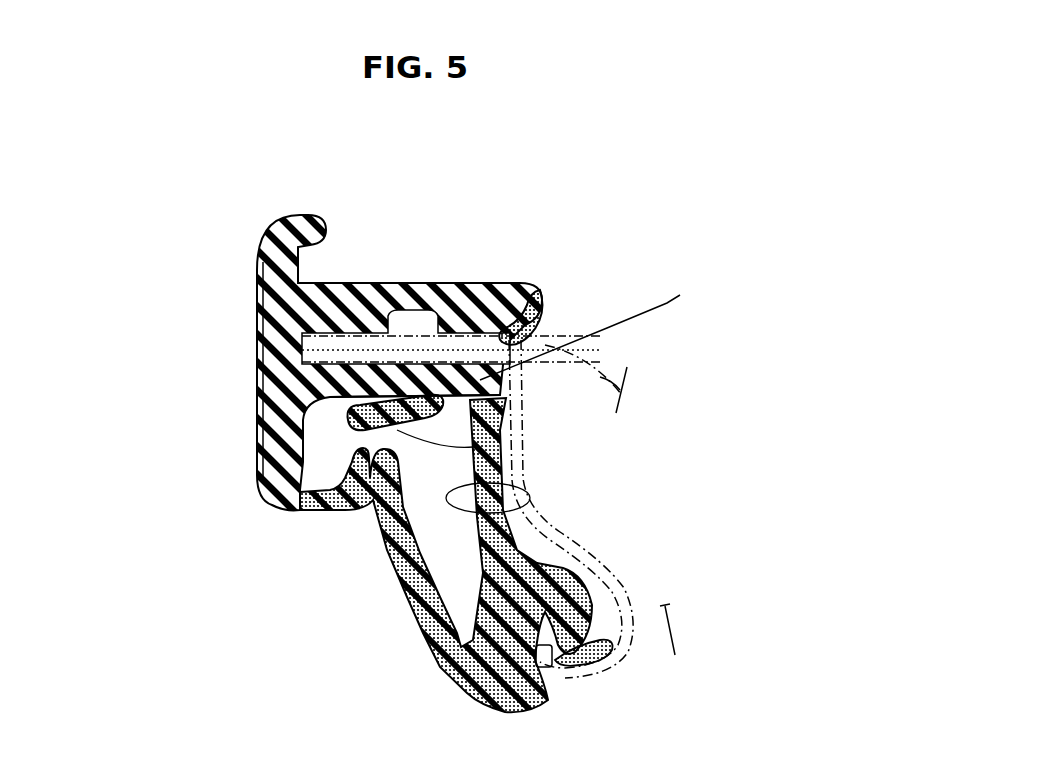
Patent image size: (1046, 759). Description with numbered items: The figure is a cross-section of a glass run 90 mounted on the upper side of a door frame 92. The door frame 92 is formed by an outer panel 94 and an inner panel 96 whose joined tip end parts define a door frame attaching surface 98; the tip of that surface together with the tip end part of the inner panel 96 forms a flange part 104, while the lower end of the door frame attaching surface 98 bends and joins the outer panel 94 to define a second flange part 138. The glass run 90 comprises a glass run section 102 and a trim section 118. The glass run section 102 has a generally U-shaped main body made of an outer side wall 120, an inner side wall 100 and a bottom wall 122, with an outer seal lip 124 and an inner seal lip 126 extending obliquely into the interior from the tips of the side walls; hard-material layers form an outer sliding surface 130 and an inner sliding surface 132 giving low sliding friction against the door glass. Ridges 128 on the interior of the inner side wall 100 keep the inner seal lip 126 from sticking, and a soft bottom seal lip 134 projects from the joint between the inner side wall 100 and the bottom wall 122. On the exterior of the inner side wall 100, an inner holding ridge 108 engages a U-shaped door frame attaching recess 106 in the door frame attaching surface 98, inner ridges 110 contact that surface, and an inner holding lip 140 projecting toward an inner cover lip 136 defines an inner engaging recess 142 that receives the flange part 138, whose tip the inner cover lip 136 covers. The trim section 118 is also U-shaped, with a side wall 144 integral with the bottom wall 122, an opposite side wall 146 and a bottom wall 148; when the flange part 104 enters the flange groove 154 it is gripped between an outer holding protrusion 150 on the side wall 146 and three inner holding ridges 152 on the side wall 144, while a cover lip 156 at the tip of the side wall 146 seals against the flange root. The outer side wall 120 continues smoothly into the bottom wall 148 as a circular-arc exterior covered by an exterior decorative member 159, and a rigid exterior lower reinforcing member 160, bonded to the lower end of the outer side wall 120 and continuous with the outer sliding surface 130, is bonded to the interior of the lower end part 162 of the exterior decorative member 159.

The glass run 90 is at (235, 214).
The door frame 92 is at (562, 334).
The outer panel 94 is at (640, 635).
The inner panel 96 is at (600, 358).
The door frame attaching surface 98 is at (607, 540).
The inner side wall 100 is at (530, 477).
The glass run section 102 is at (358, 535).
The flange part 104 is at (345, 338).
The door frame attaching recess 106 is at (627, 592).
The inner holding ridge 108 is at (600, 580).
The inner ridges 110 is at (613, 413).
The trim section 118 is at (390, 282).
The outer side wall 120 is at (283, 441).
The bottom wall 122 is at (358, 412).
The outer seal lip 124 is at (340, 505).
The inner seal lip 126 is at (400, 580).
The ridges 128 is at (530, 498).
The outer sliding surface 130 is at (350, 492).
The inner sliding surface 132 is at (385, 560).
The bottom seal lip 134 is at (530, 437).
The inner cover lip 136 is at (640, 663).
The flange part 138 is at (605, 680).
The inner holding lip 140 is at (600, 588).
The inner engaging recess 142 is at (585, 700).
The side wall 144 is at (606, 328).
The side wall 146 is at (468, 395).
The bottom wall 148 is at (283, 302).
The outer holding protrusion 150 is at (440, 330).
The inner holding ridges 152 is at (340, 363).
The flange groove 154 is at (330, 335).
The cover lip 156 is at (550, 303).
The exterior decorative member 159 is at (300, 316).
The exterior lower reinforcing member 160 is at (287, 500).
The lower end part 162 is at (267, 497).